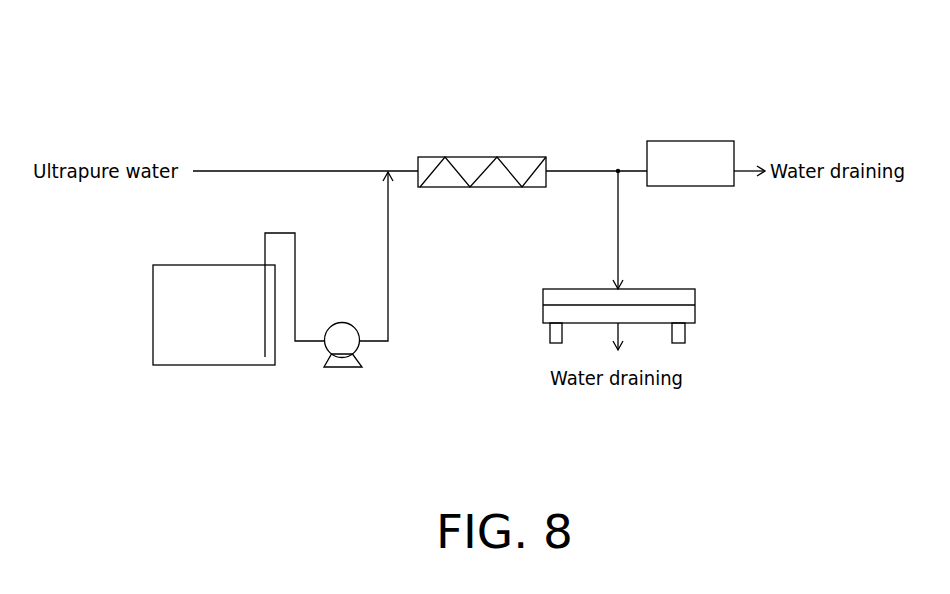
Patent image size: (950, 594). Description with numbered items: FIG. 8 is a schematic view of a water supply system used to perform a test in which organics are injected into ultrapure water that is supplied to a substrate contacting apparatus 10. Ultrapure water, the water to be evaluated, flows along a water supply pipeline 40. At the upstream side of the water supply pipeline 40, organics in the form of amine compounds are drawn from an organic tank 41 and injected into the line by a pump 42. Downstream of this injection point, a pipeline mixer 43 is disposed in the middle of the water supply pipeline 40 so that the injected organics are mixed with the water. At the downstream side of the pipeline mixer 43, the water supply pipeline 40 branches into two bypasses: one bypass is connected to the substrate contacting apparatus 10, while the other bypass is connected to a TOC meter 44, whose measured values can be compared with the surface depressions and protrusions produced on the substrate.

The substrate contacting apparatus 10 is at (710, 294).
The water supply pipeline 40 is at (255, 171).
The organic tank 41 is at (171, 367).
The pump 42 is at (334, 368).
The pipeline mixer 43 is at (480, 157).
The TOC meter 44 is at (705, 141).